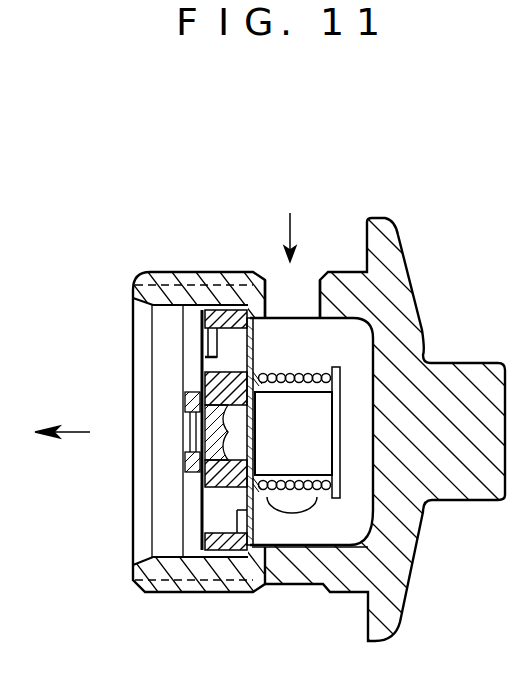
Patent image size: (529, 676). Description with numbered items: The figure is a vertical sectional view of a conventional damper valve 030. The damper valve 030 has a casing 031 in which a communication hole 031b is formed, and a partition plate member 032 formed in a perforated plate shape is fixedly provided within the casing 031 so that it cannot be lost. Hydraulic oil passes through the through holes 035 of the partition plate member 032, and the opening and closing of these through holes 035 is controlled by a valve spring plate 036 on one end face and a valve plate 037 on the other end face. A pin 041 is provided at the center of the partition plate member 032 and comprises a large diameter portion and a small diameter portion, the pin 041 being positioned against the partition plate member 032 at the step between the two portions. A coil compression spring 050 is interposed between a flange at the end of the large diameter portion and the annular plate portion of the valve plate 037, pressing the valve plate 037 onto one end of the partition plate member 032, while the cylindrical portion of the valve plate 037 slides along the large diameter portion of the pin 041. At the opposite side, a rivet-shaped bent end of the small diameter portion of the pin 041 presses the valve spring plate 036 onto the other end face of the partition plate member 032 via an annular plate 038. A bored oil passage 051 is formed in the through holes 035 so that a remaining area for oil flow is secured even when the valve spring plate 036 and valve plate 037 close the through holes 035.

The damper valve 030 is at (375, 172).
The casing 031 is at (405, 553).
The communication hole 031b is at (300, 290).
The partition plate member 032 is at (218, 313).
The through holes 035 is at (217, 358).
The valve spring plate 036 is at (200, 343).
The valve plate 037 is at (253, 360).
The annular plate 038 is at (217, 481).
The pin 041 is at (313, 417).
The coil compression spring 050 is at (303, 498).
The bored oil passage 051 is at (207, 330).